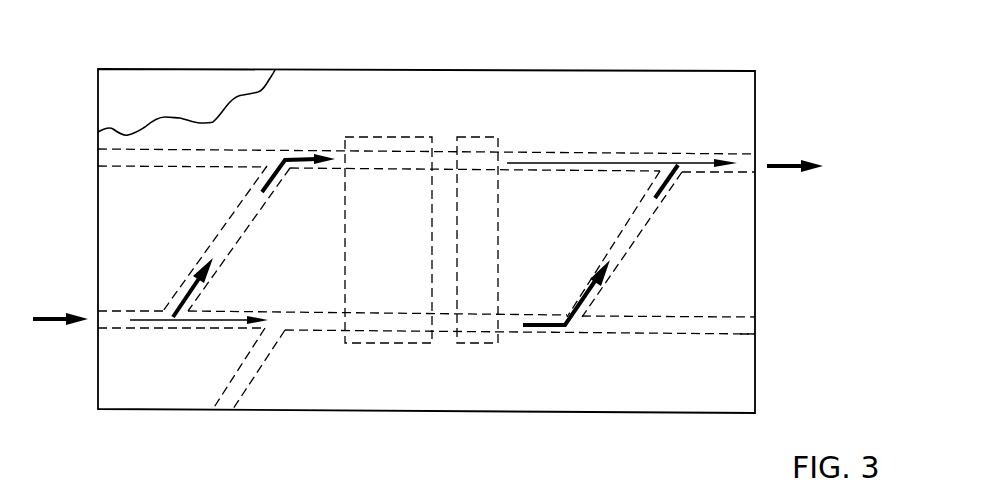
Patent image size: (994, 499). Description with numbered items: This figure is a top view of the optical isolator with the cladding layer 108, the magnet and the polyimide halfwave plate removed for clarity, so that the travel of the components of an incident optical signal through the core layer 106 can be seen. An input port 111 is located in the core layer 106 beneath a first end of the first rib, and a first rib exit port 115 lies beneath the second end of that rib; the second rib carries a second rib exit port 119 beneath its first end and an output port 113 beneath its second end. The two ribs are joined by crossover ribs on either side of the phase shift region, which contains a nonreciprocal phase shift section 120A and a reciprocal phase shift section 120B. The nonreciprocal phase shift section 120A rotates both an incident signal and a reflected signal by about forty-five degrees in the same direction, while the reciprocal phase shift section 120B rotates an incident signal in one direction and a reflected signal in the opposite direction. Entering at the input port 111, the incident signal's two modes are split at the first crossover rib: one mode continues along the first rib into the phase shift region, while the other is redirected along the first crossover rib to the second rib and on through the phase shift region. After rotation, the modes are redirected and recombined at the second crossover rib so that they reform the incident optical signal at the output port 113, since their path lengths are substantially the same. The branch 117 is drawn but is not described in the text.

The core layer 106 is at (465, 413).
The cladding layer 108 is at (158, 85).
The input port 111 is at (97, 319).
The output port 113 is at (755, 168).
The first rib exit port 115 is at (754, 327).
The tap waveguide branch 117 is at (220, 410).
The second rib exit port 119 is at (98, 162).
The nonreciprocal phase shift section 120A is at (365, 137).
The reciprocal phase shift section 120B is at (477, 137).